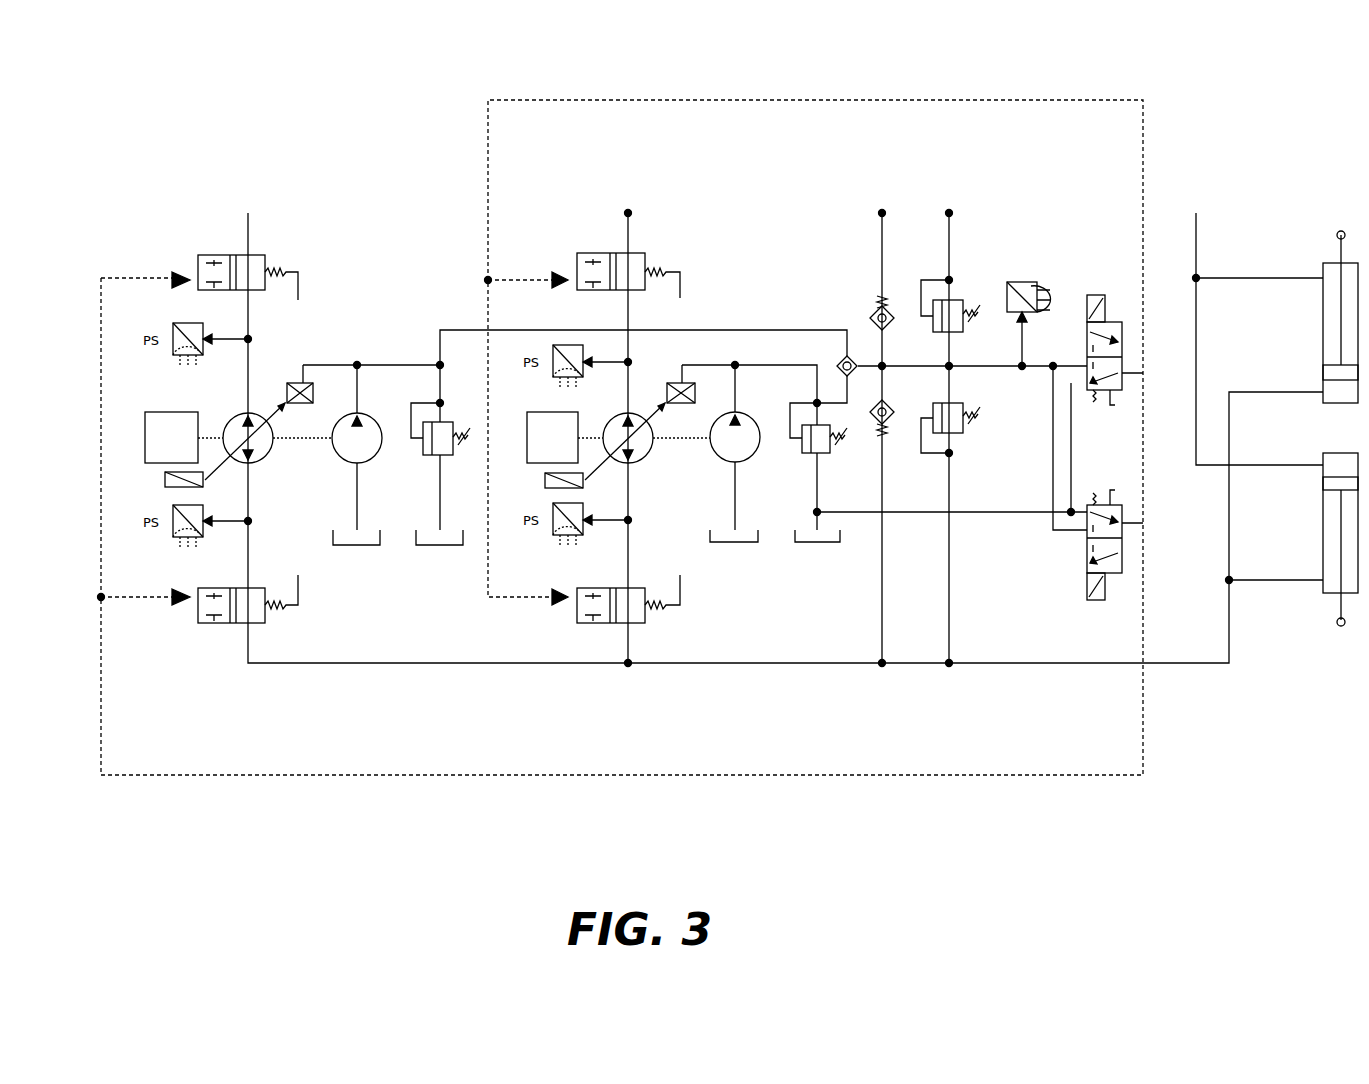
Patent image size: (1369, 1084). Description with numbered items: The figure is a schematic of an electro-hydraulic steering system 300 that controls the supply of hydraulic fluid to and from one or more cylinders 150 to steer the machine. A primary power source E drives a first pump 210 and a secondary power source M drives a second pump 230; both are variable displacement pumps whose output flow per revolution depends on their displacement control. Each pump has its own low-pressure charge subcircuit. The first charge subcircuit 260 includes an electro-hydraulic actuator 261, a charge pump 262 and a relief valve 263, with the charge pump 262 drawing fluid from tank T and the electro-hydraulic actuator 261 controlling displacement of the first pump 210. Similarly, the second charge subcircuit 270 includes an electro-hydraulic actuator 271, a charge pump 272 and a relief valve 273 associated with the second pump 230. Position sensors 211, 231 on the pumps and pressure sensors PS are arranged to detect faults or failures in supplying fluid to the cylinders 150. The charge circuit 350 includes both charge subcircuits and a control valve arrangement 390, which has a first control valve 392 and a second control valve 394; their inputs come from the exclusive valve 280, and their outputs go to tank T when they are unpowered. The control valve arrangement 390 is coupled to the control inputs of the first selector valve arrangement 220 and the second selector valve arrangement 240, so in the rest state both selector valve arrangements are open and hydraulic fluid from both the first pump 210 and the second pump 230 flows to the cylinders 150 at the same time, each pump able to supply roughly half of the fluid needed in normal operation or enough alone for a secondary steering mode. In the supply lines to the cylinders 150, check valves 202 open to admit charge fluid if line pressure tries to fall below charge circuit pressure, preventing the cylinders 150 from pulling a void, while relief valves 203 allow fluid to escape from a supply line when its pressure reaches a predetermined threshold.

The electro-hydraulic steering system 300 is at (283, 92).
The second selector valve arrangement 240 is at (203, 255).
The first selector valve arrangement 220 is at (635, 255).
The second pump 230 is at (237, 415).
The position sensor 231 is at (167, 478).
The second charge subcircuit 270 is at (392, 325).
The electro-hydraulic actuator 271 is at (292, 386).
The charge pump 272 is at (372, 460).
The relief valve 273 is at (452, 455).
The first pump 210 is at (641, 465).
The position sensor 211 is at (546, 490).
The first charge subcircuit 260 is at (755, 575).
The electro-hydraulic actuator 261 is at (670, 385).
The charge pump 262 is at (712, 460).
The relief valve 263 is at (808, 460).
The exclusive valve 280 is at (858, 360).
The check valve 202 is at (888, 312).
The relief valve 203 is at (957, 300).
The control valve arrangement 390 is at (1038, 552).
The first control valve 392 is at (1122, 380).
The second control valve 394 is at (1122, 517).
The charge circuit 350 is at (1132, 645).
The cylinder 150 is at (1323, 320).